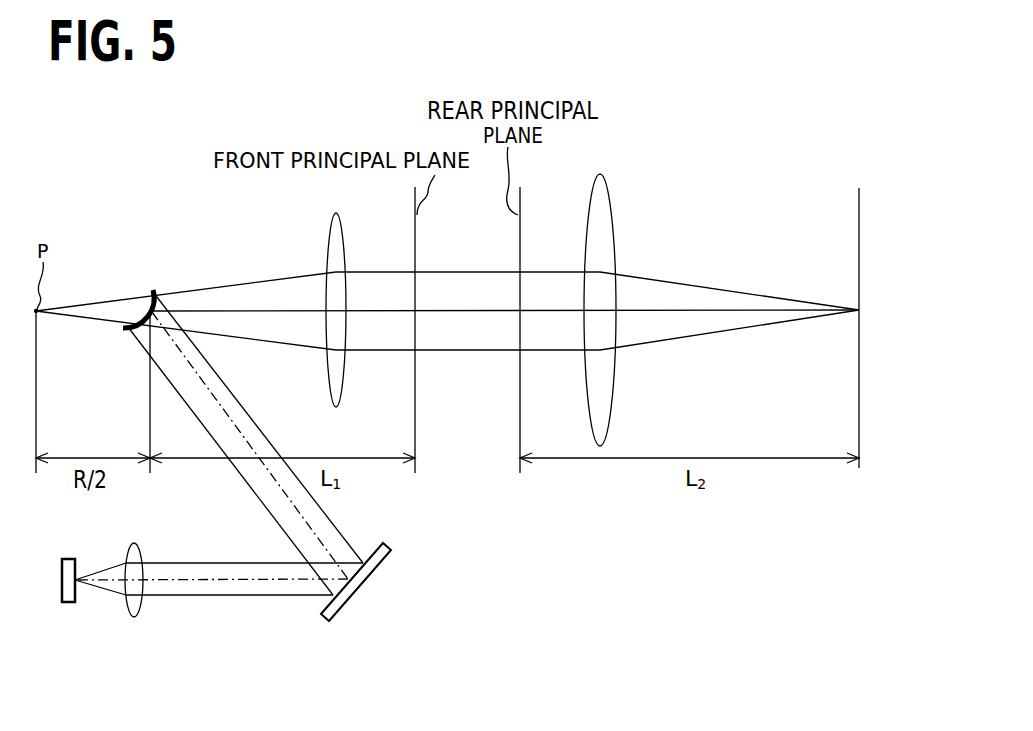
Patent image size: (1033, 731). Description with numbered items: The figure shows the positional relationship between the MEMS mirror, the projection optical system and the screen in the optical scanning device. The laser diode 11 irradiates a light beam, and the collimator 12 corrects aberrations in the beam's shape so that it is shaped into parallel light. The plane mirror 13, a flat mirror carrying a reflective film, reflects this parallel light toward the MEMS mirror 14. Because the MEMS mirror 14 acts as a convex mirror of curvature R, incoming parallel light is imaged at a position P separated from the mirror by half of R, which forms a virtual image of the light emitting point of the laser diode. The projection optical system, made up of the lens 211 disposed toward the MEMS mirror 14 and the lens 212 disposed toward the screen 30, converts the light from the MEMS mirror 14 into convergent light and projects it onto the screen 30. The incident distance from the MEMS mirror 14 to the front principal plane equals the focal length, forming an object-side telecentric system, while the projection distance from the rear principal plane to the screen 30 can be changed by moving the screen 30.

The laser diode 11 is at (72, 603).
The collimator 12 is at (136, 544).
The plane mirror 13 is at (368, 576).
The MEMS mirror 14 is at (151, 289).
The lens 211 is at (336, 214).
The lens 212 is at (603, 176).
The screen 30 is at (860, 228).